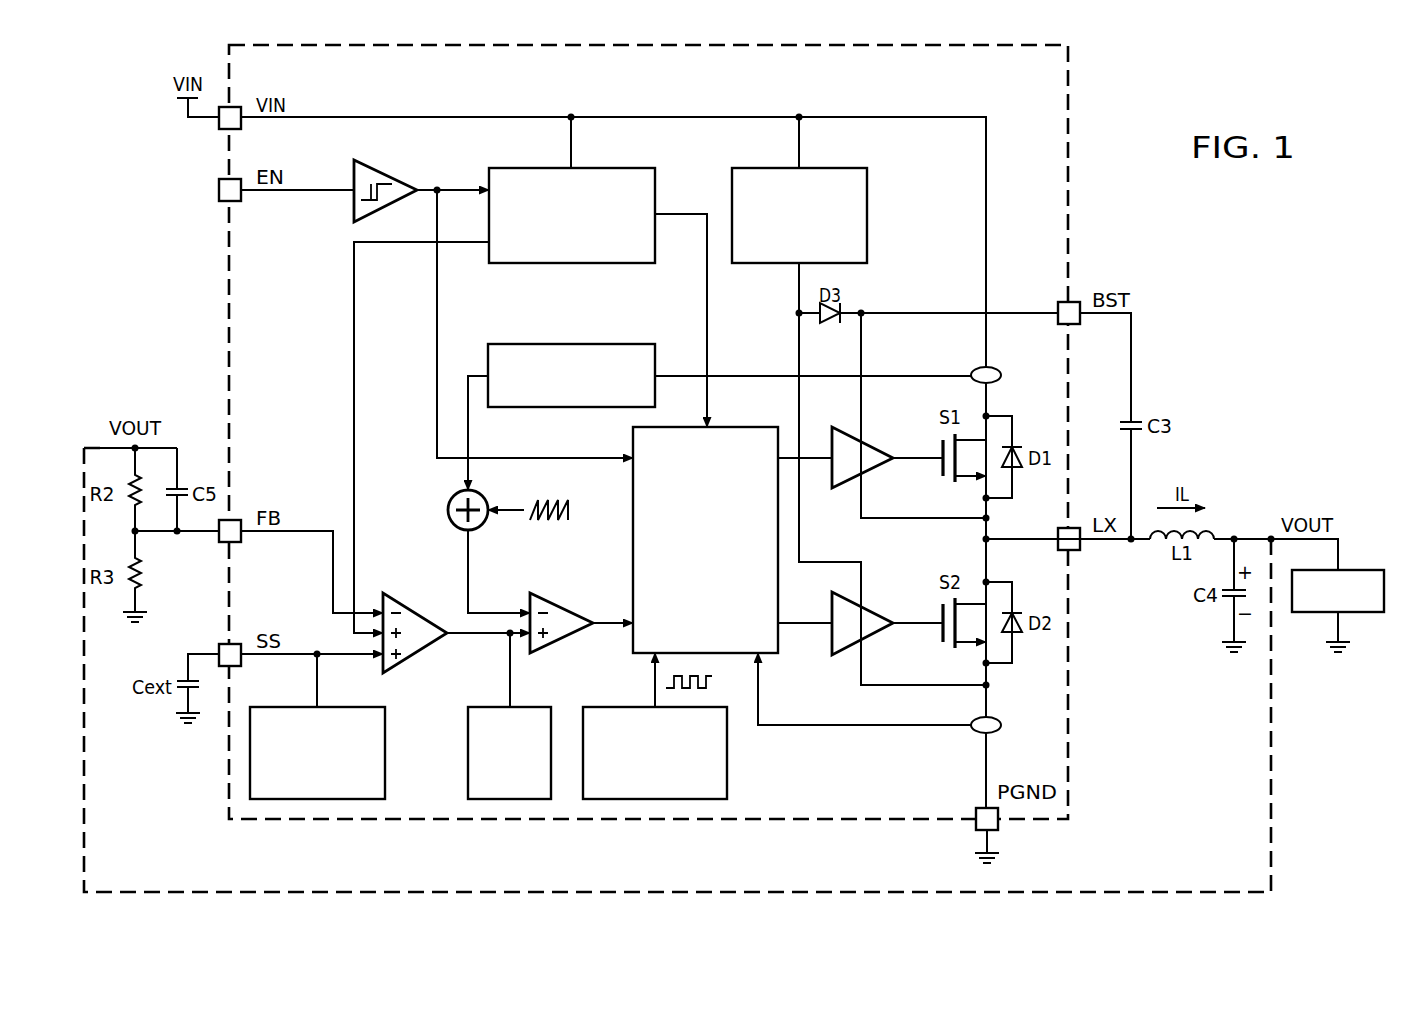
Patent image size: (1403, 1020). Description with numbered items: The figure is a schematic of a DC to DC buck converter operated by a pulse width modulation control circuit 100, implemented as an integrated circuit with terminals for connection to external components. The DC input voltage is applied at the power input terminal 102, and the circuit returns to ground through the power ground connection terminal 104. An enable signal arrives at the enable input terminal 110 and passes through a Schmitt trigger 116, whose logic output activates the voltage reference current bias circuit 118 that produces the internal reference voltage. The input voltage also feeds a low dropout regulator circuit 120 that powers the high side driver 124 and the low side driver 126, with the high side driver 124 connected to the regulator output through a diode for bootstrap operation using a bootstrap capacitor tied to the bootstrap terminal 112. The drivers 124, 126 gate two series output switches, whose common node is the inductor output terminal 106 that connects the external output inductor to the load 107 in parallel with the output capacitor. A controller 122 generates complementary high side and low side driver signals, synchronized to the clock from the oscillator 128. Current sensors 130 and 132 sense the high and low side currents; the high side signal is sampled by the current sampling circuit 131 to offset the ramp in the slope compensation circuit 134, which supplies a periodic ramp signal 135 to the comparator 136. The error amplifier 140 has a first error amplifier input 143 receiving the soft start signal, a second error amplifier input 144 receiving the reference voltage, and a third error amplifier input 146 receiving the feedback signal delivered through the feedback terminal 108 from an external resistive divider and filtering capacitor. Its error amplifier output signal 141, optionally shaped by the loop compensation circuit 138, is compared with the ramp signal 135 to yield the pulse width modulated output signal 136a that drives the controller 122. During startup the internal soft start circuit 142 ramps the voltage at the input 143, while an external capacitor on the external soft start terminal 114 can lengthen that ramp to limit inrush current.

The pulse width modulation control circuit 100 is at (631, 93).
The power input terminal 102 is at (219, 126).
The power ground connection terminal 104 is at (976, 810).
The inductor output terminal 106 is at (1080, 546).
The load 107 is at (1365, 612).
The feedback terminal 108 is at (219, 540).
The enable input terminal 110 is at (219, 186).
The bootstrap terminal 112 is at (1058, 308).
The external soft start terminal 114 is at (219, 650).
The Schmitt trigger 116 is at (378, 168).
The voltage reference current bias circuit 118 is at (655, 188).
The low dropout regulator circuit 120 is at (867, 214).
The controller 122 is at (686, 573).
The high side driver 124 is at (877, 442).
The low side driver 126 is at (877, 608).
The oscillator 128 is at (727, 755).
The high side current sensor 130 is at (996, 367).
The current sampling circuit 131 is at (566, 344).
The low side current sensor 132 is at (978, 734).
The slope compensation circuit 134 is at (453, 497).
The periodic ramp signal 135 is at (470, 550).
The comparator 136 is at (560, 605).
The pulse width modulated output signal 136a is at (608, 634).
The loop compensation circuit 138 is at (468, 736).
The error amplifier 140 is at (413, 612).
The error amplifier output signal 141 is at (510, 665).
The internal soft start circuit 142 is at (385, 770).
The first error amplifier input 143 is at (317, 676).
The second error amplifier input 144 is at (354, 448).
The third error amplifier input 146 is at (306, 538).